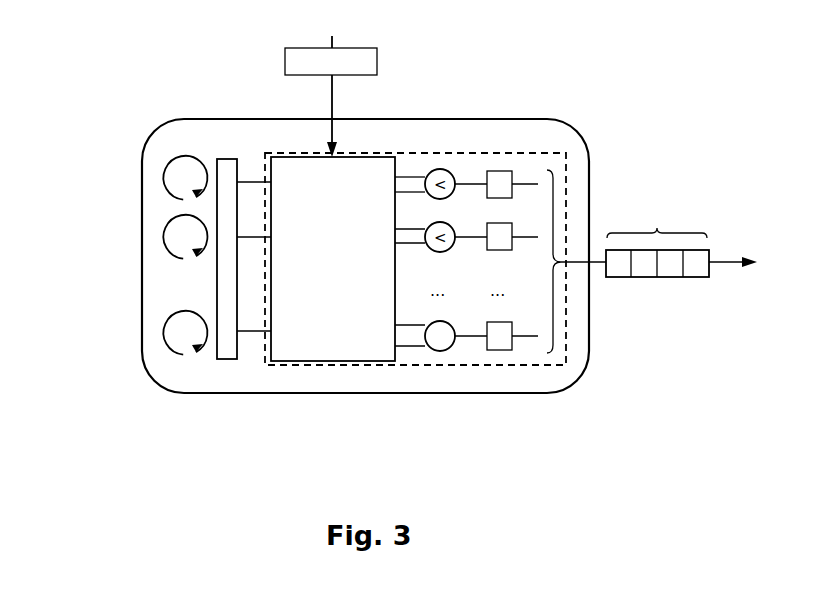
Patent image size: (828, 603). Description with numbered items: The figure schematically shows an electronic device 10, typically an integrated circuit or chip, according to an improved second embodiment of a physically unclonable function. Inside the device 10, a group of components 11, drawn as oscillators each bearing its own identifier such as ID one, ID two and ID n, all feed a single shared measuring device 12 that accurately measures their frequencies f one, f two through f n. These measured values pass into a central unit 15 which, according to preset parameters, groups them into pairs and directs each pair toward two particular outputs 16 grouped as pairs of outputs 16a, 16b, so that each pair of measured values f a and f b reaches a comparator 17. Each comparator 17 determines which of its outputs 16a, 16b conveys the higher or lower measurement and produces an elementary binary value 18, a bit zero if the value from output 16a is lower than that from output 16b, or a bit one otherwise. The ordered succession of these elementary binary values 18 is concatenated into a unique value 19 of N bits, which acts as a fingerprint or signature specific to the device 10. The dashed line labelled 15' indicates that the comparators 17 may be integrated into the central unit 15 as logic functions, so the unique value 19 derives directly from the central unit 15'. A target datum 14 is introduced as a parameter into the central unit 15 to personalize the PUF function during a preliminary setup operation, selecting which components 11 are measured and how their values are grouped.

The electronic device 10 is at (161, 128).
The components 11 is at (164, 174).
The measuring device 12 is at (220, 158).
The target datum 14 is at (285, 62).
The central unit 15 is at (333, 259).
The central unit with integrated comparators 15' is at (456, 259).
The outputs 16 is at (410, 360).
The first output 16a is at (403, 177).
The second output 16b is at (417, 192).
The comparator 17 is at (436, 351).
The elementary binary value 18 is at (504, 158).
The unique value 19 is at (657, 278).